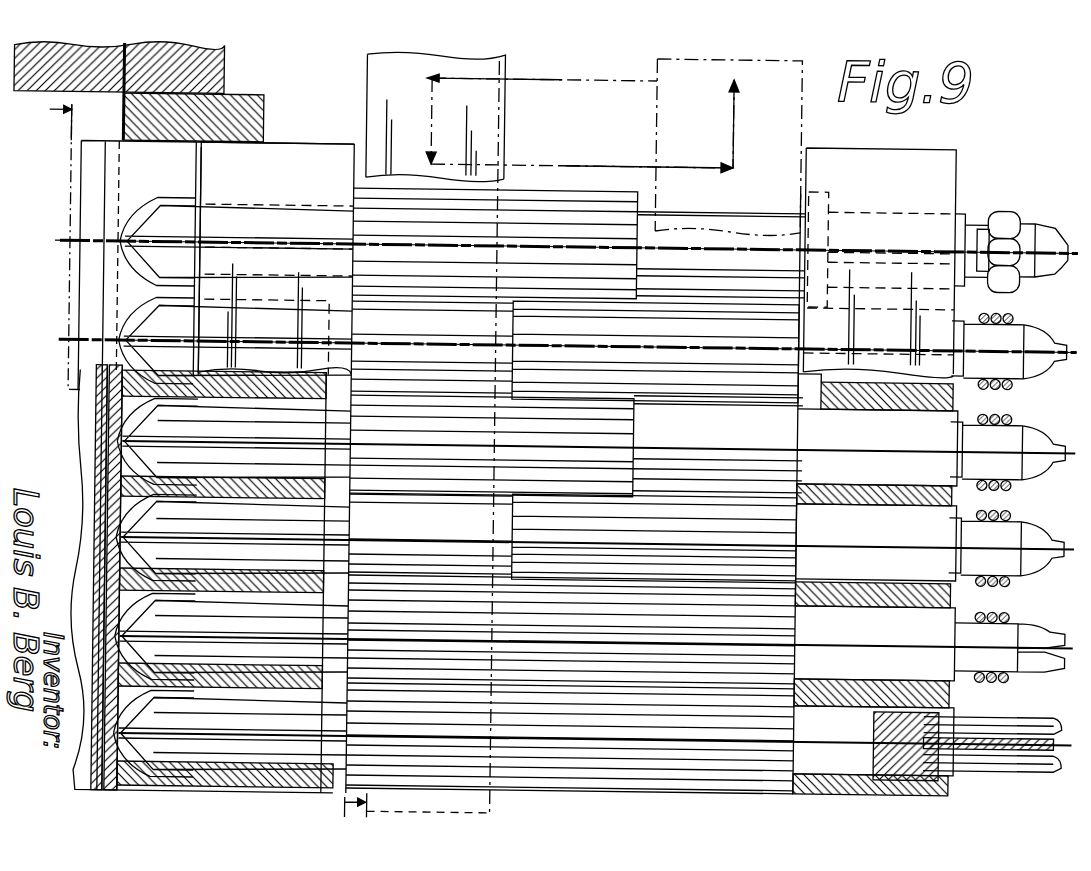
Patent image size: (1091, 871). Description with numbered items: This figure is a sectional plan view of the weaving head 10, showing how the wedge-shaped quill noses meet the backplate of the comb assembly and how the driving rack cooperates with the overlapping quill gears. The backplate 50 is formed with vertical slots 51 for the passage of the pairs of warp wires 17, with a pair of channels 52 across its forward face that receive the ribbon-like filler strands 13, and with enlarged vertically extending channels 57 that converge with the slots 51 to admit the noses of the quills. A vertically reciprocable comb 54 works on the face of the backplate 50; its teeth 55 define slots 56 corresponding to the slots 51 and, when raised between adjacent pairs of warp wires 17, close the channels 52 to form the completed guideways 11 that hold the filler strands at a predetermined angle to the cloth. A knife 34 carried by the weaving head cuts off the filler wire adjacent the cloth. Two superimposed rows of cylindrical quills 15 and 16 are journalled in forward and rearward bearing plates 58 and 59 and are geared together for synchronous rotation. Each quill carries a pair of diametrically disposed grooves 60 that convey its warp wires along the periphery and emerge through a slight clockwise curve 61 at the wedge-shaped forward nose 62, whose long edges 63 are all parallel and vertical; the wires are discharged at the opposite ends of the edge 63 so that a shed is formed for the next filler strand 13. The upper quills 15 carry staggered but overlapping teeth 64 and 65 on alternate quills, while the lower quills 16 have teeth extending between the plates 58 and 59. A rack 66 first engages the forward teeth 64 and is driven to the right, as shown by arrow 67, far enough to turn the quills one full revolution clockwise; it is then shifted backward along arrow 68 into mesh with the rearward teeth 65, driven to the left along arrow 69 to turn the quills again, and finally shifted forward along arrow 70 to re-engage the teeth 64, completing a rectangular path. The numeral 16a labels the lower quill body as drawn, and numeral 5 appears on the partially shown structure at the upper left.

The mold plate 5 is at (22, 62).
The knife 34 is at (244, 94).
The rack 66 is at (366, 87).
The bearing plate 58 is at (308, 143).
The vertical slots 51 is at (125, 240).
The warp wires 17 is at (64, 245).
The weaving head 10 is at (48, 265).
The vertically extending channels 57 is at (165, 205).
The slots 56 is at (99, 441).
The teeth 55 is at (103, 464).
The channels 52 is at (142, 462).
The guideways 11 is at (97, 496).
The backplate 50 is at (119, 594).
The comb 54 is at (80, 648).
The long edges 63 is at (140, 628).
The wedge-shaped forward nose 62 is at (146, 720).
The curve 61 is at (206, 740).
The grooves or channels 60 is at (330, 738).
The filler strands 13 is at (110, 792).
The tube body 16a is at (375, 634).
The teeth 65 is at (514, 326).
The teeth 64 is at (552, 191).
The arrow 67 is at (430, 101).
The arrow 70 is at (572, 78).
The arrow 68 is at (622, 159).
The arrow 69 is at (733, 110).
The bearing plate 59 is at (844, 148).
The quills 15 is at (1030, 212).
The quills 16 is at (1032, 611).